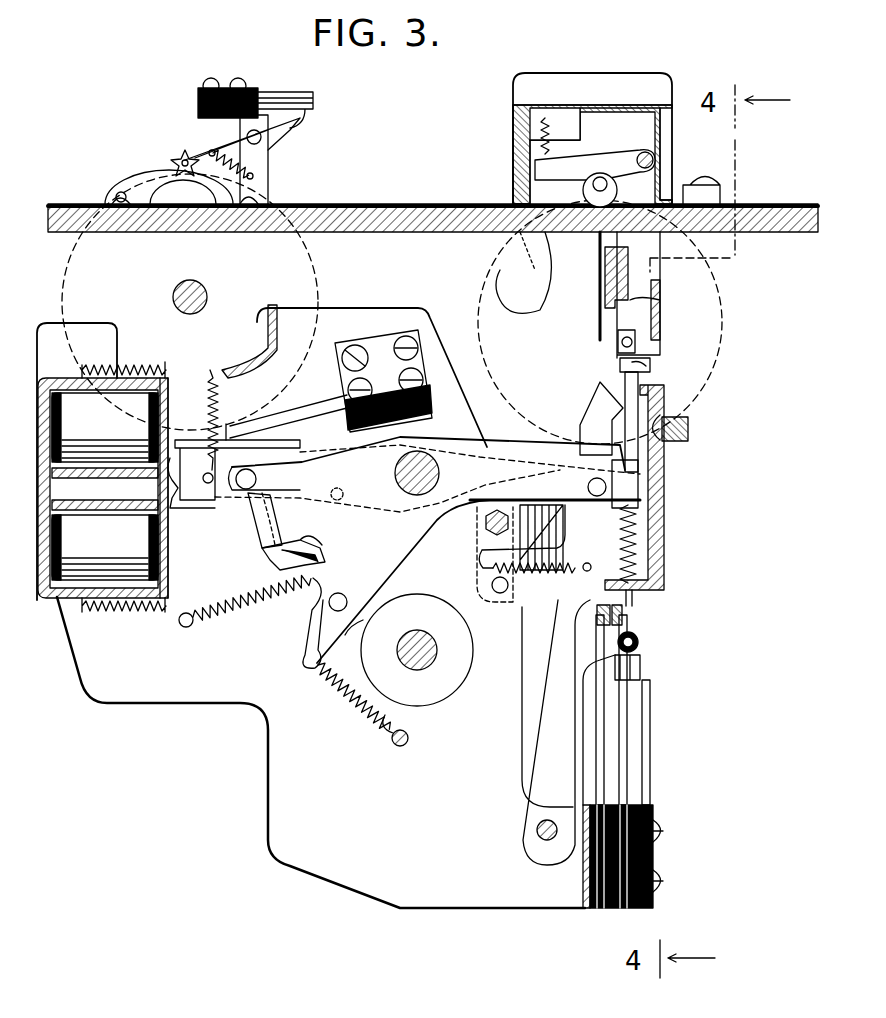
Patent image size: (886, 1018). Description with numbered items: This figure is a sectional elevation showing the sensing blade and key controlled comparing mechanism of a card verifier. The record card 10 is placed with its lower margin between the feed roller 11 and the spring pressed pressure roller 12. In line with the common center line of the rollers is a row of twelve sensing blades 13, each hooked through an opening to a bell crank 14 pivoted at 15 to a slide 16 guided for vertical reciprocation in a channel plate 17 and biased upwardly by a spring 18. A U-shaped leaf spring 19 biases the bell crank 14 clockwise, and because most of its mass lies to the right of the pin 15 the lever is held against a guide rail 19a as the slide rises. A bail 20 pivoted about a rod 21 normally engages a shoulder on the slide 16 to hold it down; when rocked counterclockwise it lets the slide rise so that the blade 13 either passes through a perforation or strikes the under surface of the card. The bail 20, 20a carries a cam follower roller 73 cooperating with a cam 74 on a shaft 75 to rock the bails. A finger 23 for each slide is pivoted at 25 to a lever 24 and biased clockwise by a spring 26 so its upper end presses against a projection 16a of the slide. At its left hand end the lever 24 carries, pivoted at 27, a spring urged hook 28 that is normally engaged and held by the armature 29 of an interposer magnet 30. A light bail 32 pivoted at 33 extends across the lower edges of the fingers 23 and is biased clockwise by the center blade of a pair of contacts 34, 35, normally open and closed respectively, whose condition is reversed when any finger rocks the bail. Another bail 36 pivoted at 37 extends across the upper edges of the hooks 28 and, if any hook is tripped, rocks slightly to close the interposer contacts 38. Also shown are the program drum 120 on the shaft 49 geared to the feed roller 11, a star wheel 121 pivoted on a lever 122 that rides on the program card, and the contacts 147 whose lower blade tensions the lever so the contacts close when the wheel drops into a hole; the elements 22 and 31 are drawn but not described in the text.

The record card 10 is at (735, 204).
The feed roller 11 is at (520, 255).
The spring pressed pressure roller 12 is at (612, 160).
The sensing blade 13 is at (600, 285).
The bell crank 14 is at (655, 325).
The pivot pin 15 is at (636, 342).
The slide 16 is at (640, 388).
The projection 16a is at (690, 410).
The channel plate 17 is at (665, 495).
The spring 18 is at (640, 525).
The U-shaped leaf spring 19 is at (652, 365).
The guide rail 19a is at (660, 305).
The bail 20 is at (628, 478).
The bail 20a is at (256, 512).
The rod 21 is at (425, 498).
The guide 22 is at (660, 272).
The finger 23 is at (595, 420).
The lever 24 is at (490, 460).
The pivot 25 is at (596, 497).
The spring 26 is at (525, 600).
The pivot 27 is at (242, 491).
The spring urged hook 28 is at (265, 545).
The armature 29 is at (170, 440).
The interposer magnet 30 is at (105, 486).
The tension spring 31 is at (225, 392).
The light bail 32 is at (557, 660).
The pivot 33 is at (535, 838).
The contact 34 is at (625, 615).
The contact 35 is at (635, 668).
The bail 36 is at (222, 438).
The pivot 37 is at (345, 490).
The interposer contacts 38 is at (275, 400).
The shaft 49 is at (205, 300).
The cam follower roller 73 is at (307, 603).
The cam 74 is at (432, 697).
The shaft 75 is at (417, 630).
The drum 120 is at (250, 185).
The star wheel 121 is at (178, 163).
The lever 122 is at (222, 148).
The contacts 147 is at (313, 97).